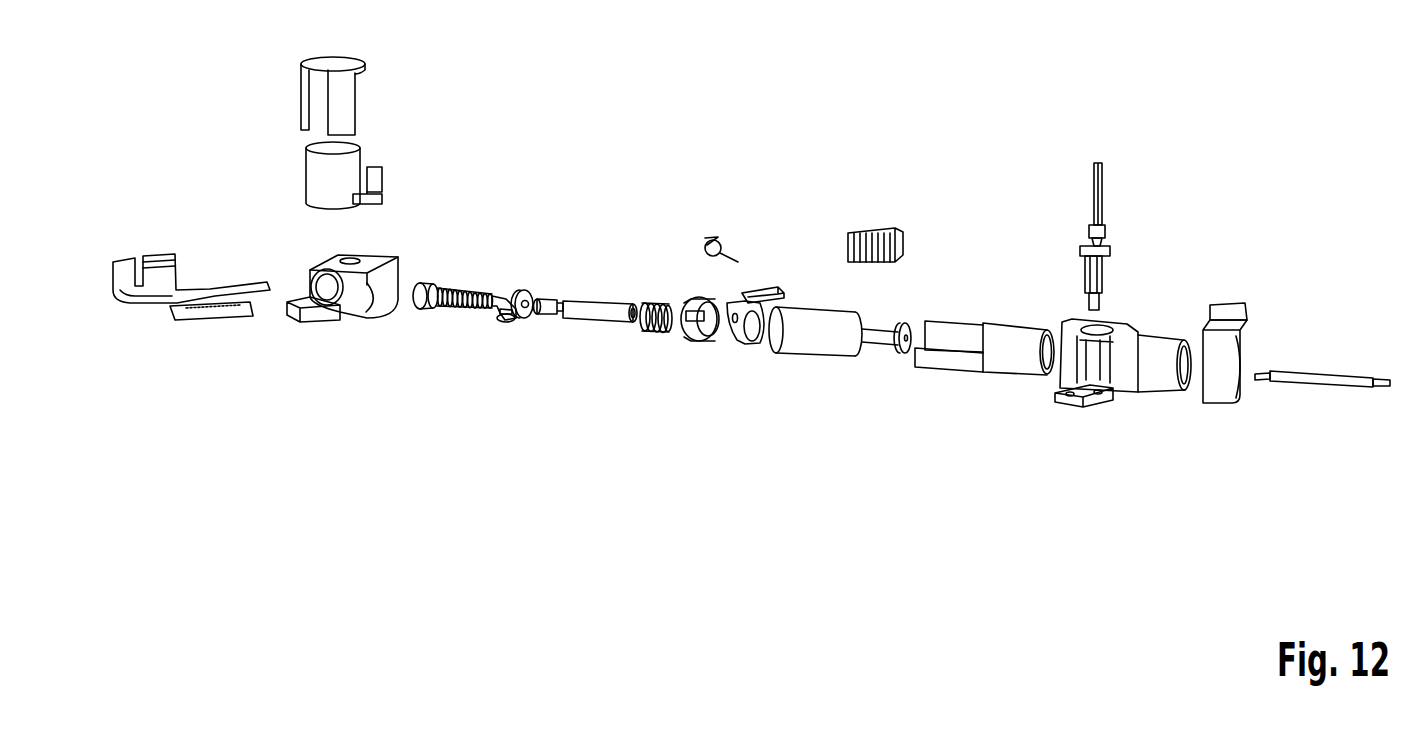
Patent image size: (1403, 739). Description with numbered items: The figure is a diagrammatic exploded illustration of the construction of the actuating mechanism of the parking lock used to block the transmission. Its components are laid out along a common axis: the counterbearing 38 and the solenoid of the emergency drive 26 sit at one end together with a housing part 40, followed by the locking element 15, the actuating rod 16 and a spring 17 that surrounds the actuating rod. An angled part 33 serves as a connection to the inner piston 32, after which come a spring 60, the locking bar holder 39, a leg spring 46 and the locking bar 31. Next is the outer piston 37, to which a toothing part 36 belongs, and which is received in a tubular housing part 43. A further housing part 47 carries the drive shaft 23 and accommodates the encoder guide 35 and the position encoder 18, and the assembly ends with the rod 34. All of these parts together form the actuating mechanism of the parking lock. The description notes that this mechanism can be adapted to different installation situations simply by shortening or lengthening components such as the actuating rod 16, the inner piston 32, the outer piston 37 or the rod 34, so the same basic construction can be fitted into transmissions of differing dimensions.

The locking element 15 is at (417, 308).
The actuating rod 16 is at (495, 312).
The spring 17 is at (460, 306).
The position encoder 18 is at (1228, 302).
The drive shaft 23 is at (1103, 190).
The solenoid of the emergency drive 26 is at (325, 174).
The locking bar 31 is at (745, 340).
The inner piston 32 is at (578, 316).
The angled part 33 is at (525, 290).
The rod 34 is at (1320, 384).
The encoder guide 35 is at (1223, 388).
The toothing part 36 is at (877, 232).
The outer piston 37 is at (822, 348).
The counterbearing 38 is at (152, 300).
The locking bar holder 39 is at (700, 340).
The housing part 40 is at (355, 318).
The tubular housing part 43 is at (1003, 360).
The leg spring 46 is at (715, 232).
The housing part 47 is at (1152, 378).
The spring 60 is at (654, 332).